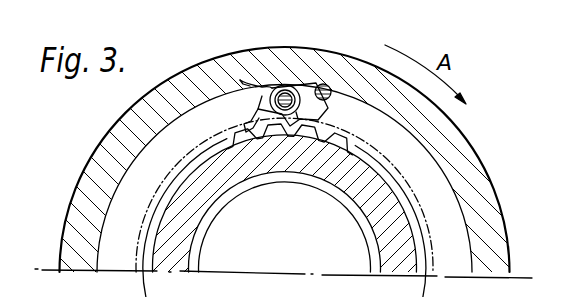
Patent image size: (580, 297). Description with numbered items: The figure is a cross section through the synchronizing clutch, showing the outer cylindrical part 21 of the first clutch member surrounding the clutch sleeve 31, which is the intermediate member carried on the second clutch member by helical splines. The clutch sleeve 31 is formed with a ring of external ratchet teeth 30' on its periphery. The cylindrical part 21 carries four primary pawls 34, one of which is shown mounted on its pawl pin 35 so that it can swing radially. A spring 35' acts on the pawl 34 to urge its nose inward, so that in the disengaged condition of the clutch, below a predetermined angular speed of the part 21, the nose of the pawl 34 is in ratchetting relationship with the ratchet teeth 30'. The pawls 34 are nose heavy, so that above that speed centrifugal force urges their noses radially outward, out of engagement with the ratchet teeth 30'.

The cylindrical part 21 is at (97, 152).
The external ratchet teeth 30' is at (284, 199).
The clutch sleeve 31 is at (307, 173).
The primary pawls 34 is at (259, 98).
The pawl pins 35 is at (318, 56).
The springs 35' is at (242, 54).